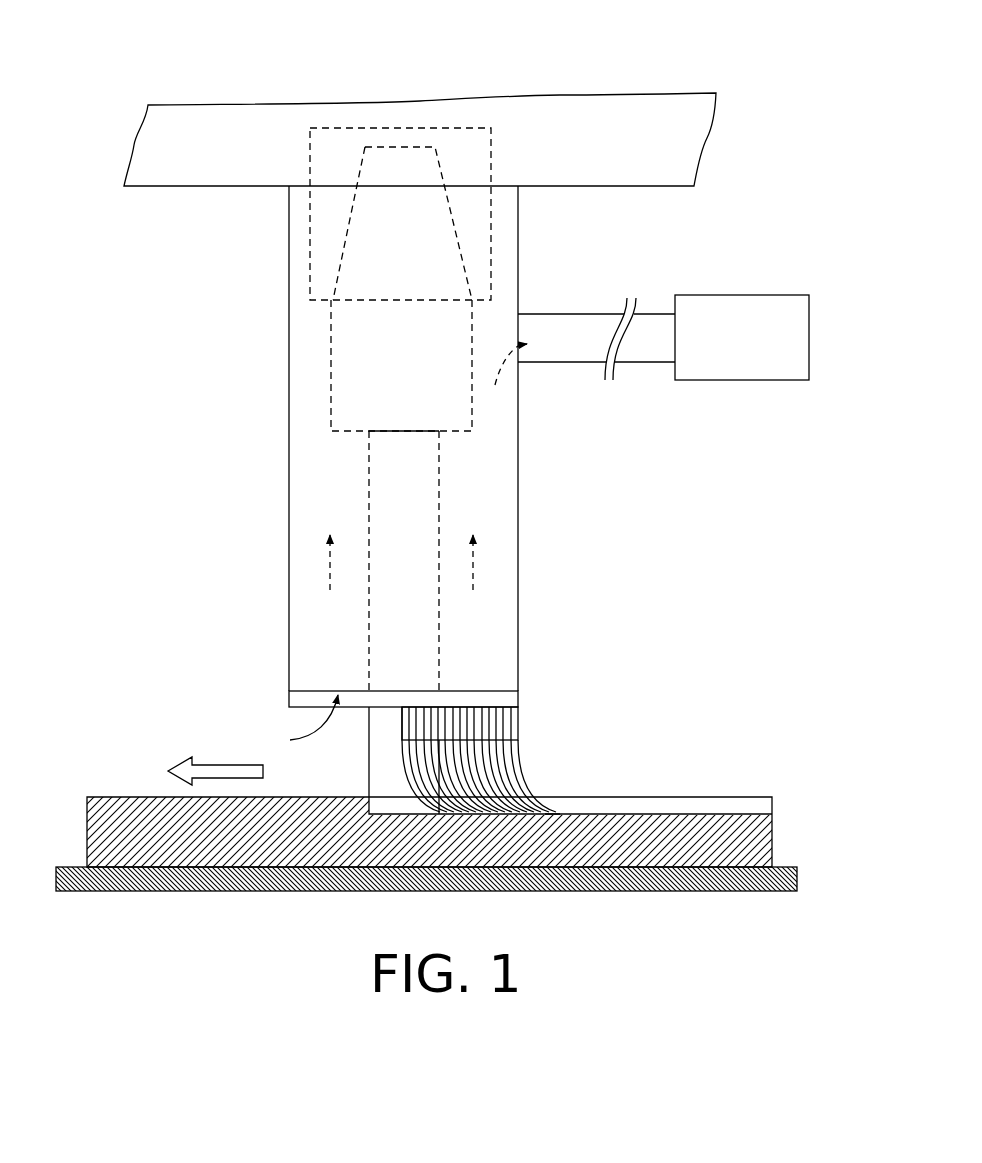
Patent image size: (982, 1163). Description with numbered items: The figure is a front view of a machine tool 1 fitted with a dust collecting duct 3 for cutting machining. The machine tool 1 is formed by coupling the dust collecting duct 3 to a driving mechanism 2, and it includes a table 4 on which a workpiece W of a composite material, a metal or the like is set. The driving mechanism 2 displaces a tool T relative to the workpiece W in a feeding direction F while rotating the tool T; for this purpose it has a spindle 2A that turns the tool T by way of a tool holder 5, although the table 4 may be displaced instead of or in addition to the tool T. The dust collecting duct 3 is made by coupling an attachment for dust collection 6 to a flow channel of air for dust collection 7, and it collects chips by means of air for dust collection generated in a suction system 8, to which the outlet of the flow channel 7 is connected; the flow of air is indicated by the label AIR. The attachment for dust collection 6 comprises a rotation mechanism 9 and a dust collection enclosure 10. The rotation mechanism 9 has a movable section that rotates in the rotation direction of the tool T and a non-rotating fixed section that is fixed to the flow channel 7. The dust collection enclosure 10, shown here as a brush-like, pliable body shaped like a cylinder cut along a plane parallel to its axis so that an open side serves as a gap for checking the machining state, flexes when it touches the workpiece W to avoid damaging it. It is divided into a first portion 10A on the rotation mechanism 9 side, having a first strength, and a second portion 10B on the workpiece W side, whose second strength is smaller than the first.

The machine tool 1 is at (190, 70).
The driving mechanism 2 is at (195, 187).
The spindle 2A is at (310, 210).
The dust collecting duct 3 is at (720, 618).
The table 4 is at (780, 866).
The tool holder 5 is at (331, 348).
The attachment for dust collection 6 is at (664, 660).
The flow channel of air for dust collection 7 is at (518, 615).
The suction system 8 is at (723, 380).
The rotation mechanism 9 is at (518, 697).
The dust collection enclosure 10 is at (535, 759).
The first portion 10A is at (518, 723).
The second portion 10B is at (520, 772).
The workpiece W is at (112, 797).
The feeding direction F is at (214, 763).
The tool T is at (368, 778).
The air flow AIR is at (330, 556).